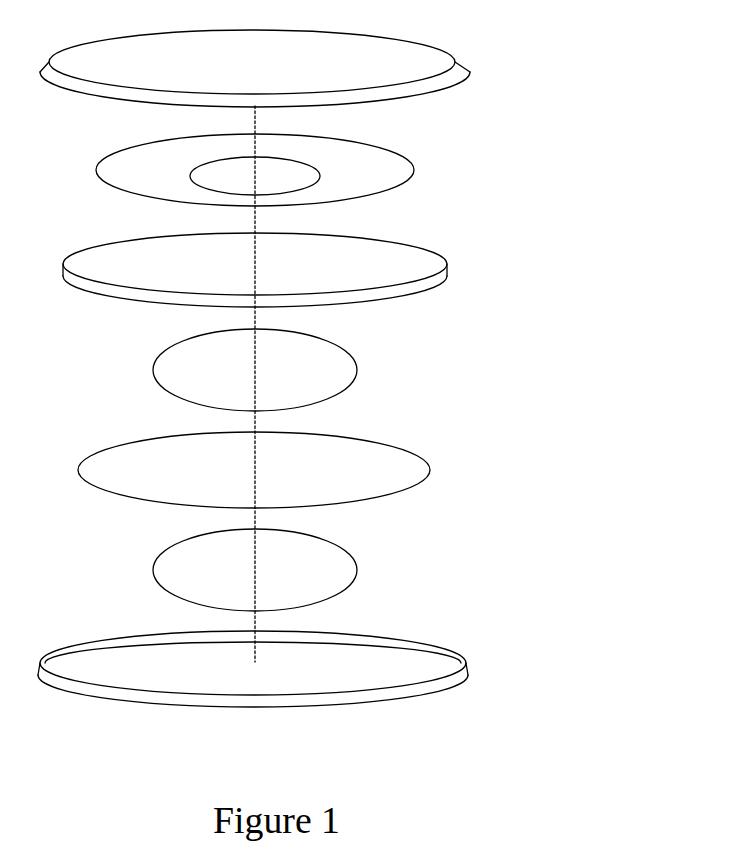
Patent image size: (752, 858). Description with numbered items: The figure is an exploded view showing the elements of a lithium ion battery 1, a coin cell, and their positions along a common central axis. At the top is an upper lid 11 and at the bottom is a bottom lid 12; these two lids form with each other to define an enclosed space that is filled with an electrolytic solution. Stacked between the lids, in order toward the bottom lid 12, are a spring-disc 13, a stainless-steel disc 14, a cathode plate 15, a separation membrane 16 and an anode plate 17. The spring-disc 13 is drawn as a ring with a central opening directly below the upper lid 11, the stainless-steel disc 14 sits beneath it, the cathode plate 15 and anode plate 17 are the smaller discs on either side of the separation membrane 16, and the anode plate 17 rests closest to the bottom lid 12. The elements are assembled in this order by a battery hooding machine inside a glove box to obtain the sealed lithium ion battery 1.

The lithium ion battery 1 is at (548, 376).
The upper lid 11 is at (450, 54).
The bottom lid 12 is at (465, 660).
The spring-disc 13 is at (412, 166).
The stainless-steel disc 14 is at (442, 260).
The cathode plate 15 is at (354, 368).
The separation membrane 16 is at (429, 464).
The anode plate 17 is at (354, 568).